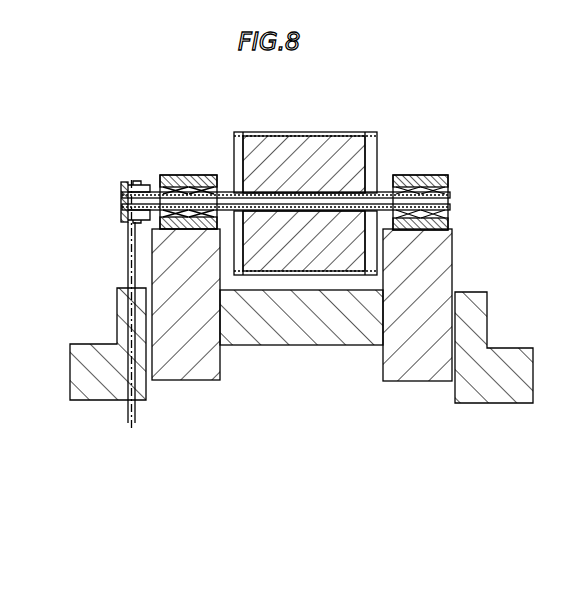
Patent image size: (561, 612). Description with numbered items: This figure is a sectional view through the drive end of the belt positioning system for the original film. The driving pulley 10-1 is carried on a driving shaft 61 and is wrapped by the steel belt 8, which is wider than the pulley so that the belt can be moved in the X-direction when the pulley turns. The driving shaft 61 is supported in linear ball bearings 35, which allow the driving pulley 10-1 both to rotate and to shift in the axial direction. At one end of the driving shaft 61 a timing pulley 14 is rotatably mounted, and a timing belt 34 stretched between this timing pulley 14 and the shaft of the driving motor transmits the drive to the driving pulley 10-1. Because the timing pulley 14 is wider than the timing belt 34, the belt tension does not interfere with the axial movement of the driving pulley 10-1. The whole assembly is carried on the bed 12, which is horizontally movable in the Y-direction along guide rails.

The steel belt 8 is at (360, 157).
The driving pulley 10-1 is at (370, 150).
The bed 12 is at (488, 306).
The timing pulley 14 is at (124, 182).
The timing belt 34 is at (127, 263).
The linear ball bearings 35 is at (167, 177).
The driving shaft 61 is at (370, 190).